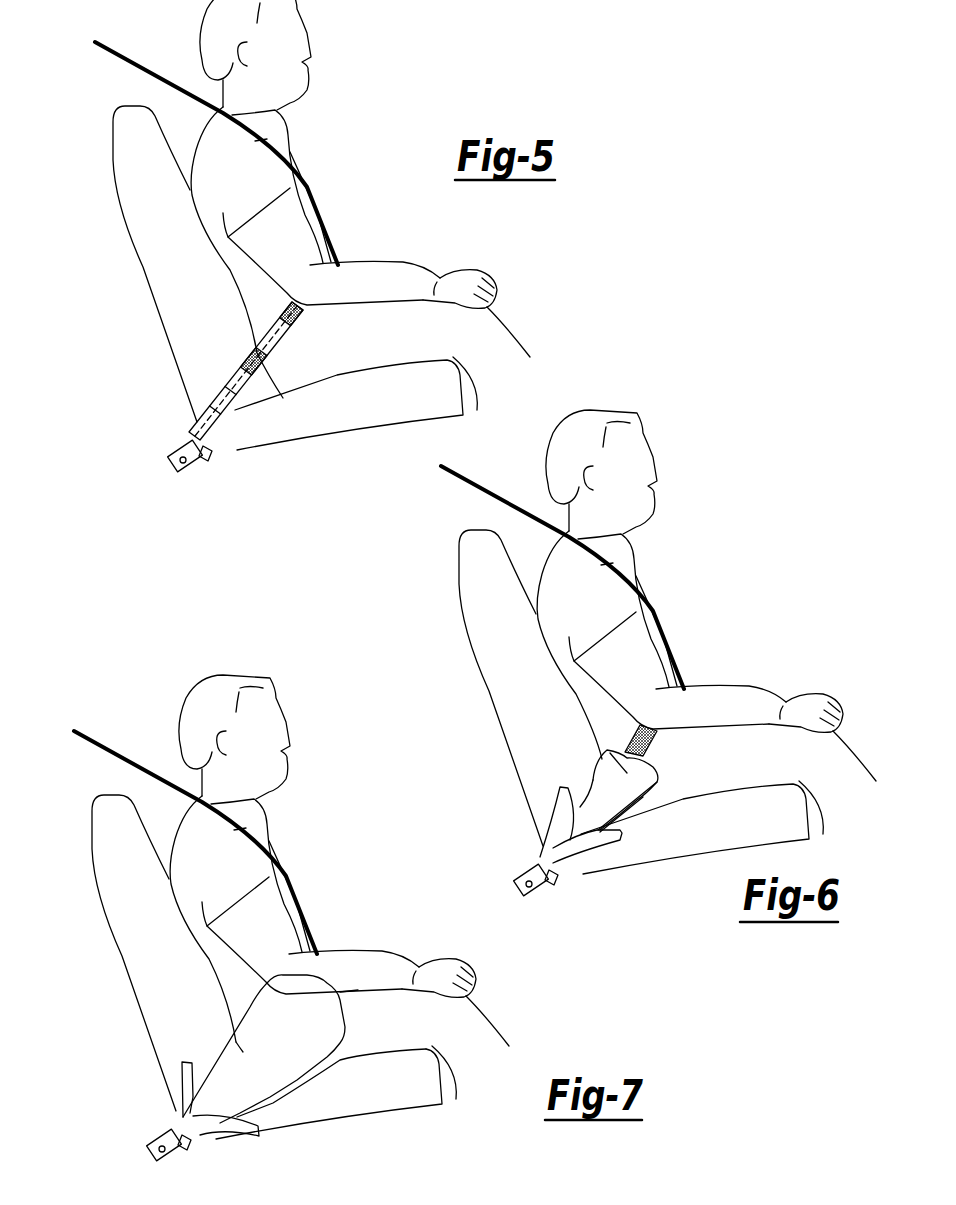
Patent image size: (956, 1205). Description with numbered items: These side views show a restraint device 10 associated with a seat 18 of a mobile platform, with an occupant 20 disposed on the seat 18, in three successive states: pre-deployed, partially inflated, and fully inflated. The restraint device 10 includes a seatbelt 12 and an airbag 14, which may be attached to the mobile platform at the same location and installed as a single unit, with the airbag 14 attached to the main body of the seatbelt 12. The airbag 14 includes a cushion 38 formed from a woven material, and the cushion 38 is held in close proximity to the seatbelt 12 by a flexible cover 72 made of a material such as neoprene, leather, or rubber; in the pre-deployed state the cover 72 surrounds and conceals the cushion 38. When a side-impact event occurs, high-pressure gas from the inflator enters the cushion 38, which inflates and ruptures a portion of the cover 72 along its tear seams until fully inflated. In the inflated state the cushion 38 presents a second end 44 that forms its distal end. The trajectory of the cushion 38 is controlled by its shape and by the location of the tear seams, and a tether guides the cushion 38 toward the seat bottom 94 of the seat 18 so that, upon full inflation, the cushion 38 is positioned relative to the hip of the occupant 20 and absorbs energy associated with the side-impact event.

In FIG. 5, the restraint device 10 is at (182, 423).
In FIG. 6, the restraint device 10 is at (511, 850).
In FIG. 7, the restraint device 10 is at (144, 1115).
In FIG. 5, the seatbelt 12 is at (165, 73).
In FIG. 6, the seatbelt 12 is at (562, 558).
In FIG. 7, the seatbelt 12 is at (195, 823).
In FIG. 5, the airbag 14 is at (212, 443).
In FIG. 6, the airbag 14 is at (646, 789).
In FIG. 7, the airbag 14 is at (291, 1072).
In FIG. 5, the seat 18 is at (136, 292).
In FIG. 6, the seat 18 is at (491, 688).
In FIG. 7, the seat 18 is at (124, 953).
In FIG. 5, the occupant 20 is at (275, 190).
In FIG. 6, the occupant 20 is at (663, 630).
In FIG. 7, the occupant 20 is at (296, 895).
In FIG. 6, the cushion 38 is at (608, 783).
In FIG. 7, the cushion 38 is at (240, 1050).
In FIG. 7, the second end 44 is at (358, 990).
In FIG. 5, the cover 72 is at (226, 376).
In FIG. 6, the cover 72 is at (599, 845).
In FIG. 7, the cover 72 is at (181, 1097).
In FIG. 5, the seat bottom 94 is at (345, 418).
In FIG. 6, the seat bottom 94 is at (702, 844).
In FIG. 7, the seat bottom 94 is at (370, 1102).